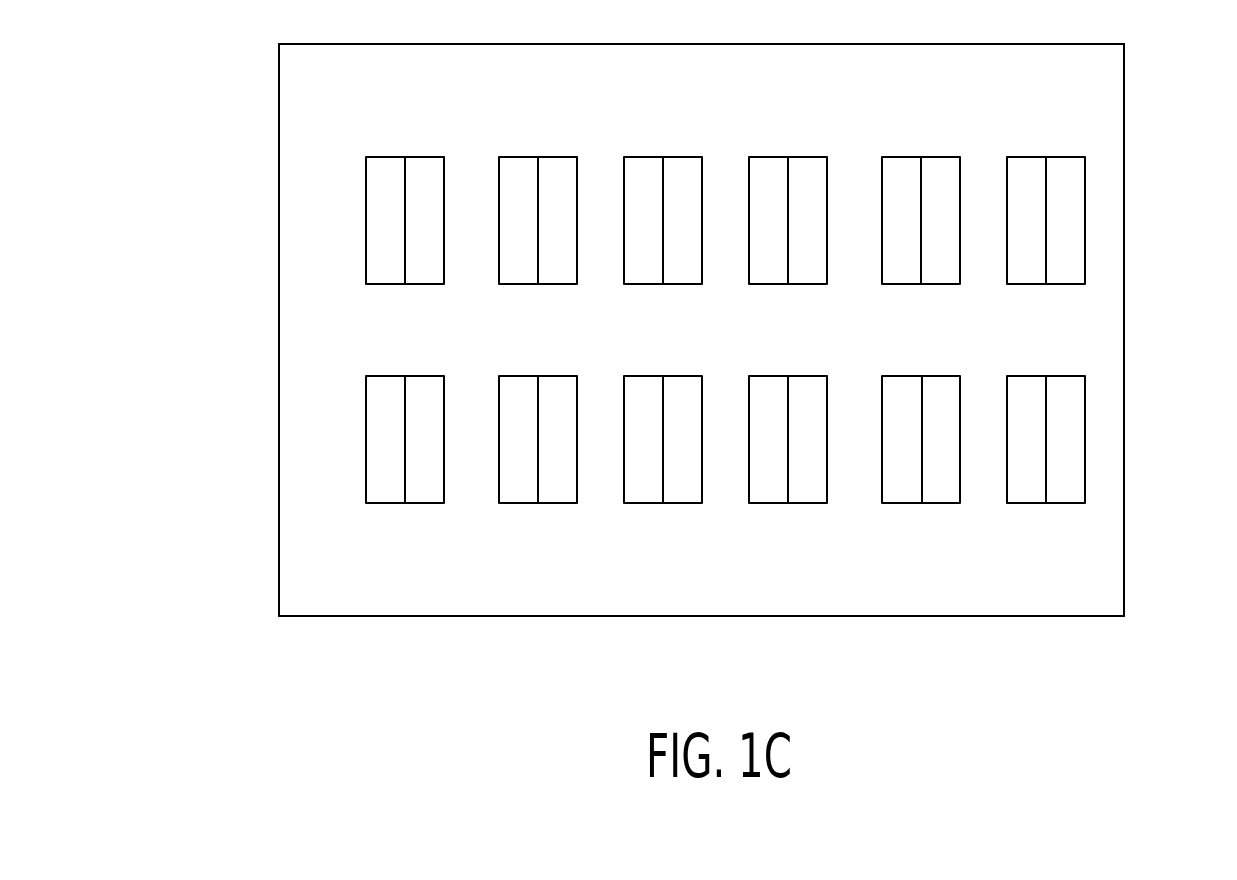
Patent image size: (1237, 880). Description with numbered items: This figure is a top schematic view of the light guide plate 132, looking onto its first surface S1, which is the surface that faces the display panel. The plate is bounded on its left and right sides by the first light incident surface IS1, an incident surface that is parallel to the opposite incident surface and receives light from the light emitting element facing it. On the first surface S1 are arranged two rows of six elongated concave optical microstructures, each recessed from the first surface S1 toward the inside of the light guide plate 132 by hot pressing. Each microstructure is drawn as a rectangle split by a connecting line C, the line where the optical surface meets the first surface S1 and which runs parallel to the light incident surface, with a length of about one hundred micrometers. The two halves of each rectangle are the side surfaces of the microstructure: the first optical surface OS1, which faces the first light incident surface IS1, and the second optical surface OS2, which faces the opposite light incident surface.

The light guide plate 132 is at (317, 147).
The connecting line C is at (652, 428).
The first surface S1 is at (1075, 125).
The first light incident surface IS1 is at (279, 432).
The first optical surface OS1 is at (939, 445).
The second optical surface OS2 is at (900, 469).